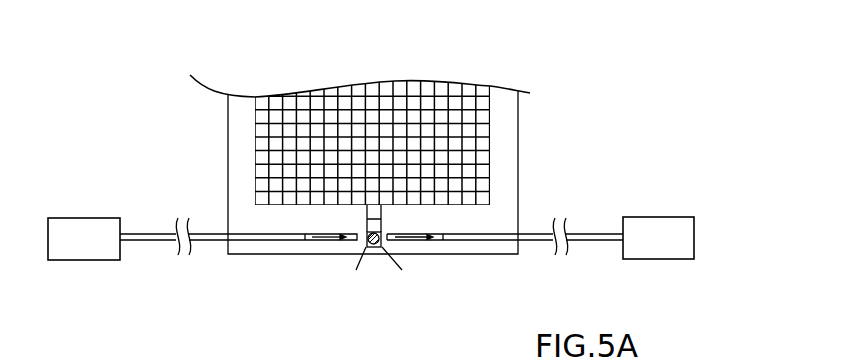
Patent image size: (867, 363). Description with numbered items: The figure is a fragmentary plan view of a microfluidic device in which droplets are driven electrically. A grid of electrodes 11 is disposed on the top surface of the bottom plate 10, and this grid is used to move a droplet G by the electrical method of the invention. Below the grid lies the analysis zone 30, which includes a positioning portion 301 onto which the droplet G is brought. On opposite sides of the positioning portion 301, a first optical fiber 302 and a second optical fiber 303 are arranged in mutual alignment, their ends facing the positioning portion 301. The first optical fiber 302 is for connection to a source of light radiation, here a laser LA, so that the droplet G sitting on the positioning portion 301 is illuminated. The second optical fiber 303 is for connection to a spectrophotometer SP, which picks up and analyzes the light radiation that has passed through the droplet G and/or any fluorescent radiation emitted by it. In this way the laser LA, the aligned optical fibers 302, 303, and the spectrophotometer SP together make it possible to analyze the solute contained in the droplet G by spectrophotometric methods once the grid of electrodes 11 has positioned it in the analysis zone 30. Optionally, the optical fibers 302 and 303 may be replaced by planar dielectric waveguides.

The bottom plate 10 is at (518, 140).
The grid of electrodes 11 is at (370, 118).
The analysis zone 30 is at (341, 258).
The positioning portion 301 is at (365, 248).
The first optical fiber 302 is at (260, 238).
The second optical fiber 303 is at (468, 240).
The droplet G is at (382, 248).
The laser LA is at (72, 217).
The spectrophotometer SP is at (663, 217).